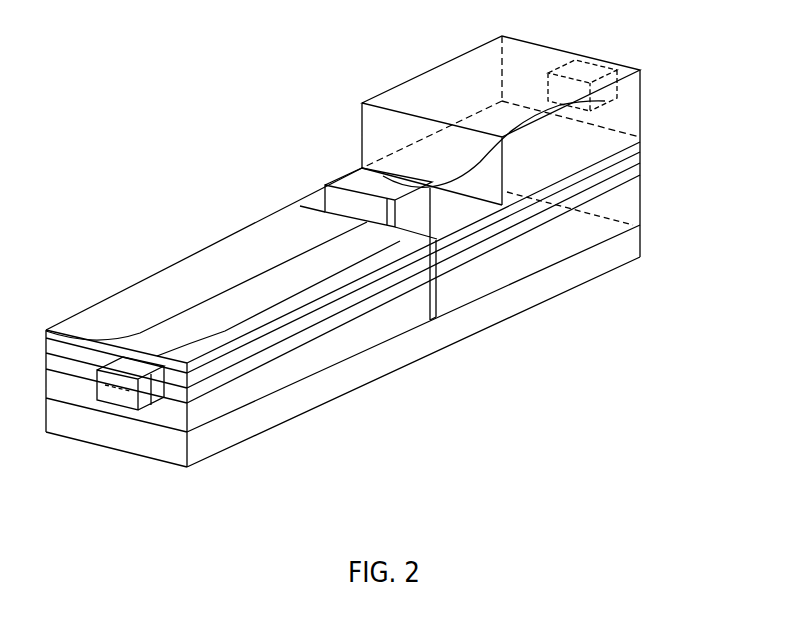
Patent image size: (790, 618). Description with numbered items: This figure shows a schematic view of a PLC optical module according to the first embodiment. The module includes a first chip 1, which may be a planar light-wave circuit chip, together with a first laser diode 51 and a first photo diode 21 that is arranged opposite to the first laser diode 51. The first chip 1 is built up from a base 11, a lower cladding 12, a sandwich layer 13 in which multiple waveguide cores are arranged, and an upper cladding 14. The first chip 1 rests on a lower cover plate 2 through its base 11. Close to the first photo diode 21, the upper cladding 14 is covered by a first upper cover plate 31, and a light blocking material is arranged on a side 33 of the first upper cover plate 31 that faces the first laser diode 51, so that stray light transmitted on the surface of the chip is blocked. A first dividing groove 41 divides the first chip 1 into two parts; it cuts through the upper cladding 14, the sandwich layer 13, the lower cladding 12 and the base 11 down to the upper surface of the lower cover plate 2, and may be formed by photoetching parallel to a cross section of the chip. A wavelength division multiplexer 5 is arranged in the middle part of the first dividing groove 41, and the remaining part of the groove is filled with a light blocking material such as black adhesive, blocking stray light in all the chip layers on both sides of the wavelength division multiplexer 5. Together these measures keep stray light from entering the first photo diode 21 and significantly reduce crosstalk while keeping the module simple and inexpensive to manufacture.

The first chip 1 is at (258, 210).
The lower cover plate 2 is at (613, 258).
The wavelength division multiplexer 5 is at (355, 182).
The base 11 is at (628, 208).
The lower cladding 12 is at (640, 172).
The sandwich layer 13 is at (640, 153).
The upper cladding 14 is at (638, 143).
The first photo diode 21 is at (587, 80).
The first upper cover plate 31 is at (447, 77).
The side of the first upper cover plate 33 is at (365, 165).
The first dividing groove 41 is at (437, 292).
The first laser diode 51 is at (150, 404).